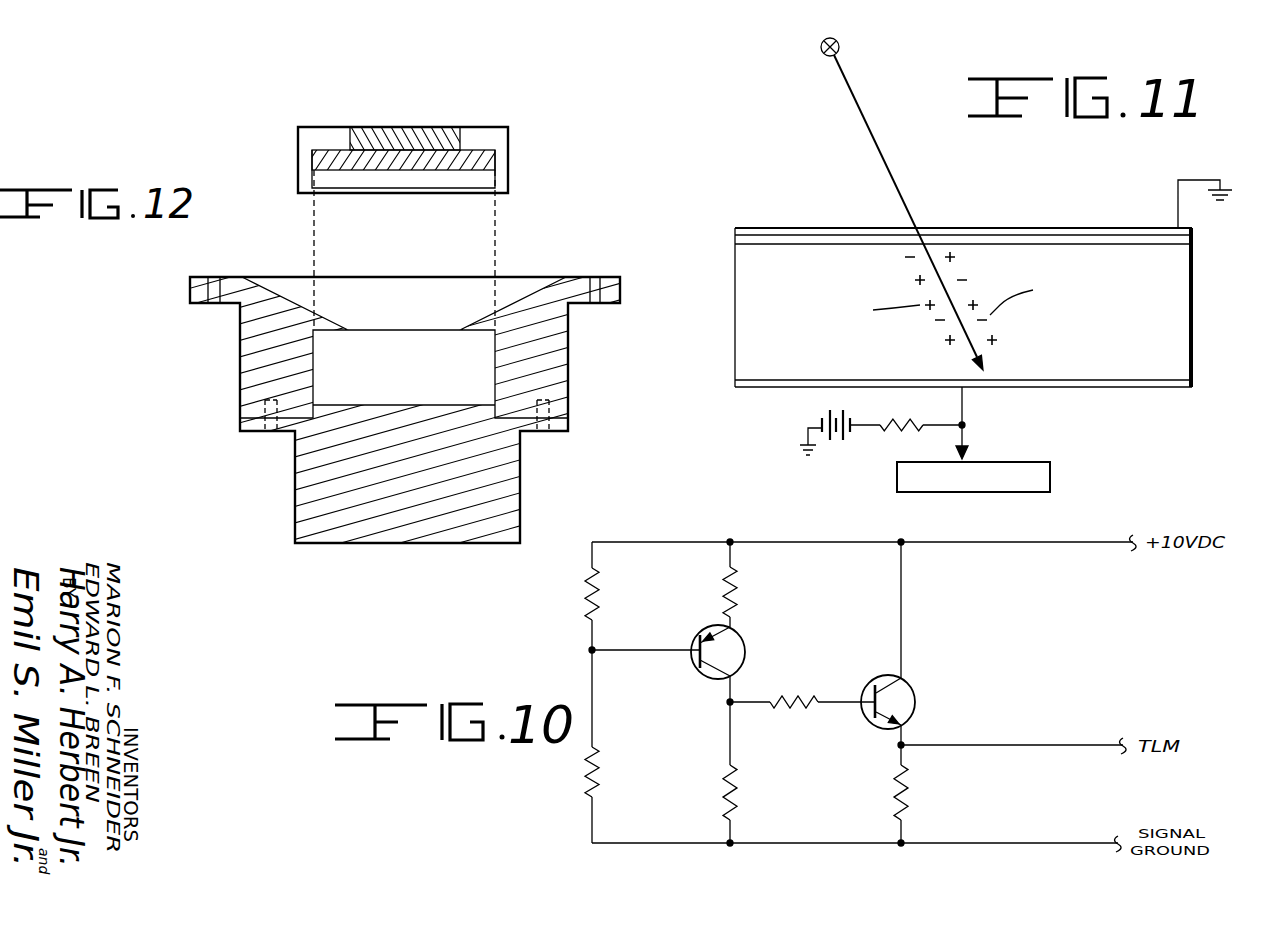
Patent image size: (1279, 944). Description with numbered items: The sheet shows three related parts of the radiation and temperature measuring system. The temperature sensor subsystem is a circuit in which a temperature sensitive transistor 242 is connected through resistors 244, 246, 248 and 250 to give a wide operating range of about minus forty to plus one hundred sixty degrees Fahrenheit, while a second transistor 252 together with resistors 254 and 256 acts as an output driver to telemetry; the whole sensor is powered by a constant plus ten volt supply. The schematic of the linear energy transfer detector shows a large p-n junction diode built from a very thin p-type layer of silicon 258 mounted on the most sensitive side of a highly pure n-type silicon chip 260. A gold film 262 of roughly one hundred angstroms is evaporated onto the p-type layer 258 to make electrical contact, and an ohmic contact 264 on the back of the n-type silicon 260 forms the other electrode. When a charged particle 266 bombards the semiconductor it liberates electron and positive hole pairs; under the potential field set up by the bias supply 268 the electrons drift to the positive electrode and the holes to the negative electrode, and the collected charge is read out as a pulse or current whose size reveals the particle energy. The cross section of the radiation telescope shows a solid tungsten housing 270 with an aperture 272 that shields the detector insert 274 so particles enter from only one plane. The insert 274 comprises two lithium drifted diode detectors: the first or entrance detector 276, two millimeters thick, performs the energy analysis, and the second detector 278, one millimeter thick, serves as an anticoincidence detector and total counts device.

In FIG. 10, the temperature sensitive transistor 242 is at (750, 652).
In FIG. 10, the resistor 244 is at (745, 592).
In FIG. 10, the resistor 246 is at (597, 592).
In FIG. 10, the resistor 248 is at (597, 765).
In FIG. 10, the resistor 250 is at (745, 793).
In FIG. 10, the transistor 252 is at (922, 702).
In FIG. 10, the resistor 254 is at (800, 713).
In FIG. 10, the resistor 256 is at (910, 793).
In FIG. 11, the p-type layer of silicon 258 is at (1195, 235).
In FIG. 11, the n-type silicon chip 260 is at (1172, 330).
In FIG. 11, the gold film 262 is at (745, 228).
In FIG. 11, the ohmic contact 264 is at (1150, 380).
In FIG. 11, the charged particle 266 is at (840, 45).
In FIG. 11, the bias supply 268 is at (830, 412).
In FIG. 12, the tungsten housing 270 is at (570, 355).
In FIG. 12, the aperture 272 is at (410, 328).
In FIG. 12, the detector insert 274 is at (502, 127).
In FIG. 12, the first or entrance detector 276 is at (363, 127).
In FIG. 12, the second detector 278 is at (310, 167).